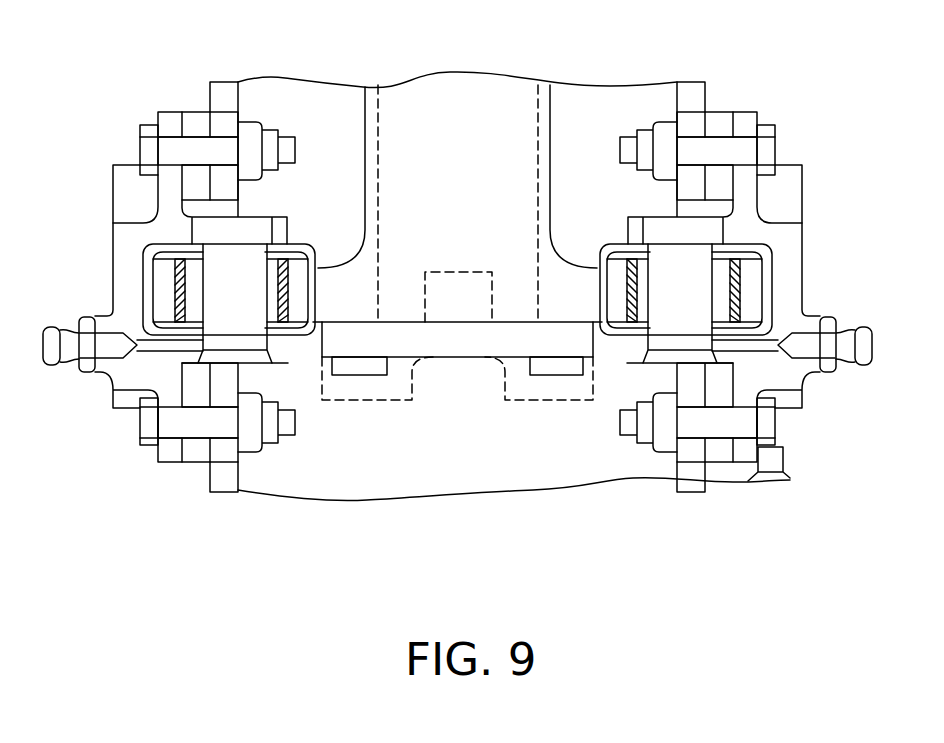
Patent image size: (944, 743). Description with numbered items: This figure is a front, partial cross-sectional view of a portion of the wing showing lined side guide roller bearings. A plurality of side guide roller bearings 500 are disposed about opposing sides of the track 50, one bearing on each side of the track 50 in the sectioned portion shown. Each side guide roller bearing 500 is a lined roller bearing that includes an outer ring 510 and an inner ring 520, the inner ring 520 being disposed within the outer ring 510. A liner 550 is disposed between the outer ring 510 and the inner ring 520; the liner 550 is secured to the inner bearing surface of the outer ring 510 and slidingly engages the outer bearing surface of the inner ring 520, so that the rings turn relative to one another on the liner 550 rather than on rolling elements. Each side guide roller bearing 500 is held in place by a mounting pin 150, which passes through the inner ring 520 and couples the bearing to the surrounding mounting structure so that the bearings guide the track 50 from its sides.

The track 50 is at (551, 109).
The mounting pin 150 is at (217, 328).
The side guide roller bearing 500 is at (137, 290).
The outer ring 510 is at (300, 275).
The inner ring 520 is at (272, 320).
The liner 550 is at (287, 297).